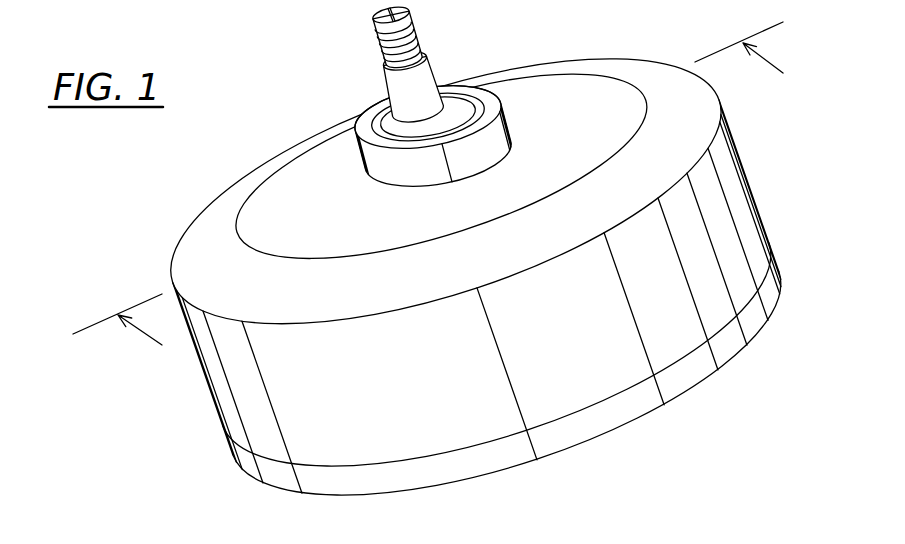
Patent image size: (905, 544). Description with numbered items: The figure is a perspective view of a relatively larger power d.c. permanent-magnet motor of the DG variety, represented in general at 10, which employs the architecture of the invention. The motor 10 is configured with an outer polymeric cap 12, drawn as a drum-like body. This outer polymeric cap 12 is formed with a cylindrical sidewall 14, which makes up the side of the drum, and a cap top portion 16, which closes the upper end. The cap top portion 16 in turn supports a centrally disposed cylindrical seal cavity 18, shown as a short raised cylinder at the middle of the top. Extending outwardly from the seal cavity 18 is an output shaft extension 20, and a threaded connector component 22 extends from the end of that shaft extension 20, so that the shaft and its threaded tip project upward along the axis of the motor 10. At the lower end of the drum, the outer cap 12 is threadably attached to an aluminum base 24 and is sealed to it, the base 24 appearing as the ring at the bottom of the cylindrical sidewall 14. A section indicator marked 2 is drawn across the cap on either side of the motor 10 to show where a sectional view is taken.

The section line of FIG. 2 is at (428, 176).
The motor 10 is at (508, 268).
The outer polymeric cap 12 is at (461, 268).
The cylindrical sidewall 14 is at (360, 444).
The cap top portion 16 is at (543, 90).
The cylindrical seal cavity 18 is at (368, 118).
The output shaft extension 20 is at (425, 75).
The threaded connector component 22 is at (380, 42).
The aluminum base 24 is at (463, 465).